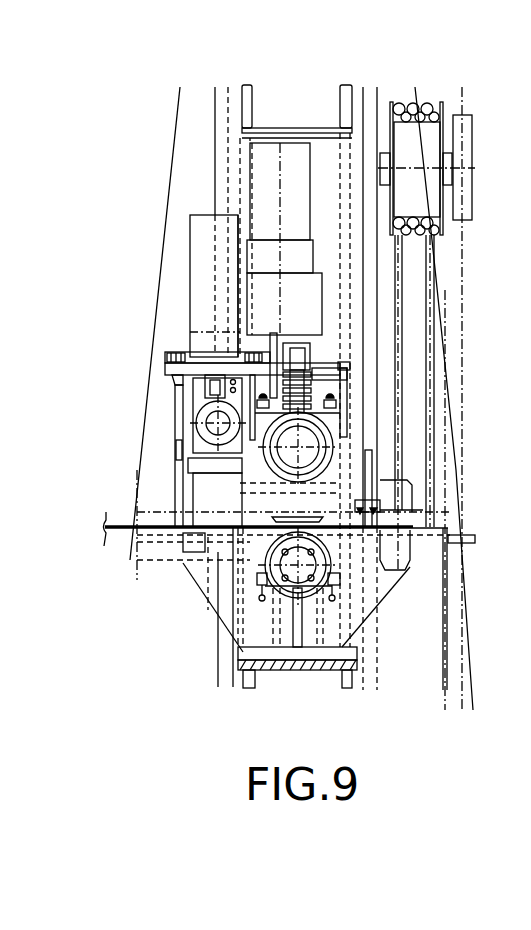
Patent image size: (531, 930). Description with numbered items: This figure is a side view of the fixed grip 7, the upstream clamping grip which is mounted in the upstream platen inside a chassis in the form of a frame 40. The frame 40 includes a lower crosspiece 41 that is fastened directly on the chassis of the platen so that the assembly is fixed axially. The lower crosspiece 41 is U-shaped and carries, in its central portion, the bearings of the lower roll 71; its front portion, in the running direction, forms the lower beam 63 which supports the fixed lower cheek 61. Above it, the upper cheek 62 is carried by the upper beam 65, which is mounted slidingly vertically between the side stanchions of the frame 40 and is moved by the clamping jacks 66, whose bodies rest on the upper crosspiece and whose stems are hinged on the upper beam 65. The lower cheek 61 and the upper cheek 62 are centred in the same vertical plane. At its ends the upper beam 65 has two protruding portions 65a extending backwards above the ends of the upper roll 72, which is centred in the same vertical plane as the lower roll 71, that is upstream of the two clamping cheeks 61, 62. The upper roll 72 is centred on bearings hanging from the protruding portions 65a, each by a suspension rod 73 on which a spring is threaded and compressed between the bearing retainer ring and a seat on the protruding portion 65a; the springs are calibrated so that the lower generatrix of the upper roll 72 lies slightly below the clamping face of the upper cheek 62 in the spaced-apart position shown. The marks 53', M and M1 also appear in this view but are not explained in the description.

The clamping jack 66 is at (200, 243).
The bracket plate 53' is at (226, 373).
The frame 40 is at (172, 391).
The fixed grip 7 is at (166, 447).
The upper beam 65 is at (197, 412).
The upper cheek 62 is at (200, 473).
The suspension rod 73 is at (312, 395).
The protruding portion 65a is at (325, 370).
The upper roll 72 is at (340, 448).
The mirror plane M is at (150, 514).
The mirror plane section M1 is at (337, 522).
The lower roll 71 is at (330, 557).
The lower cheek 61 is at (200, 535).
The lower beam 63 is at (210, 587).
The lower crosspiece 41 is at (272, 625).